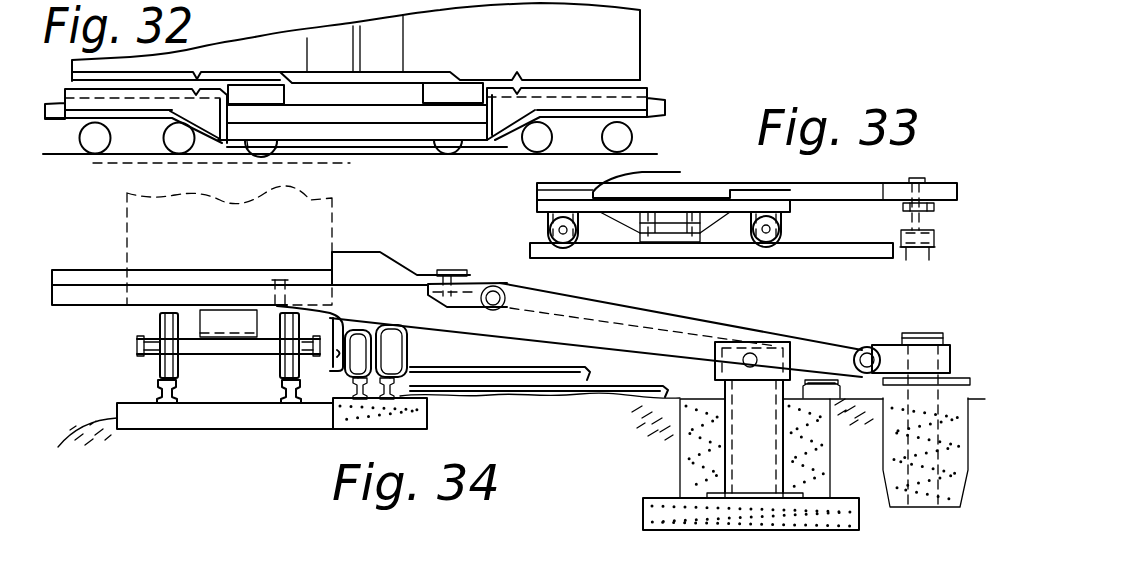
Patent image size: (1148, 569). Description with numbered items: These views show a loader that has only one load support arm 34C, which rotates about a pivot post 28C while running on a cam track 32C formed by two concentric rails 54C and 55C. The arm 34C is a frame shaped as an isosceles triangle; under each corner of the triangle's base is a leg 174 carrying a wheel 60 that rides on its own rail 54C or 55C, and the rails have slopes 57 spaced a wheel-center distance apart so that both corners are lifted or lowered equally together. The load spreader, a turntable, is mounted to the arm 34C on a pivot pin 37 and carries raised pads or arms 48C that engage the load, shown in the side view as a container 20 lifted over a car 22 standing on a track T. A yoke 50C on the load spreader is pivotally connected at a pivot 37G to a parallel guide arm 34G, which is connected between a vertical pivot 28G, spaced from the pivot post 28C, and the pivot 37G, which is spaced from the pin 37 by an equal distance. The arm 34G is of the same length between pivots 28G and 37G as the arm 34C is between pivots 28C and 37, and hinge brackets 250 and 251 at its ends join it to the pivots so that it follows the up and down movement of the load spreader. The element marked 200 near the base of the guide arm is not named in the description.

In FIG. 32, the load 20 is at (644, 48).
In FIG. 34, the load 20 is at (125, 213).
In FIG. 32, the railroad transport car 22 is at (648, 92).
In FIG. 32, the track T is at (643, 148).
In FIG. 32, the raised pads or arms 48C is at (266, 60).
In FIG. 33, the raised pads or arms 48C is at (748, 188).
In FIG. 34, the raised pads or arms 48C is at (147, 270).
In FIG. 32, the slopes 57 is at (240, 153).
In FIG. 33, the slopes 57 is at (556, 250).
In FIG. 32, the wheel 60 is at (267, 148).
In FIG. 33, the wheel 60 is at (550, 247).
In FIG. 34, the wheel 60 is at (425, 412).
In FIG. 32, the cam track 32C is at (355, 166).
In FIG. 33, the yoke 50C is at (808, 183).
In FIG. 34, the yoke 50C is at (350, 250).
In FIG. 33, the rail 54C is at (663, 257).
In FIG. 33, the rail 55C is at (790, 247).
In FIG. 33, the pivot 37G is at (912, 178).
In FIG. 34, the pivot 37G is at (464, 262).
In FIG. 33, the parallel guide arm 34G is at (928, 222).
In FIG. 34, the parallel guide arm 34G is at (800, 338).
In FIG. 33, the vertical pivot 28G is at (935, 232).
In FIG. 34, the vertical pivot 28G is at (925, 457).
In FIG. 34, the pivot pin 37 is at (277, 266).
In FIG. 34, the hinge bracket 251 is at (473, 303).
In FIG. 34, the leg 174 is at (408, 343).
In FIG. 34, the load support arm 34C is at (610, 350).
In FIG. 34, the hinge bracket 250 is at (885, 343).
In FIG. 34, the support post 200 is at (968, 365).
In FIG. 34, the pivot post 28C is at (740, 470).